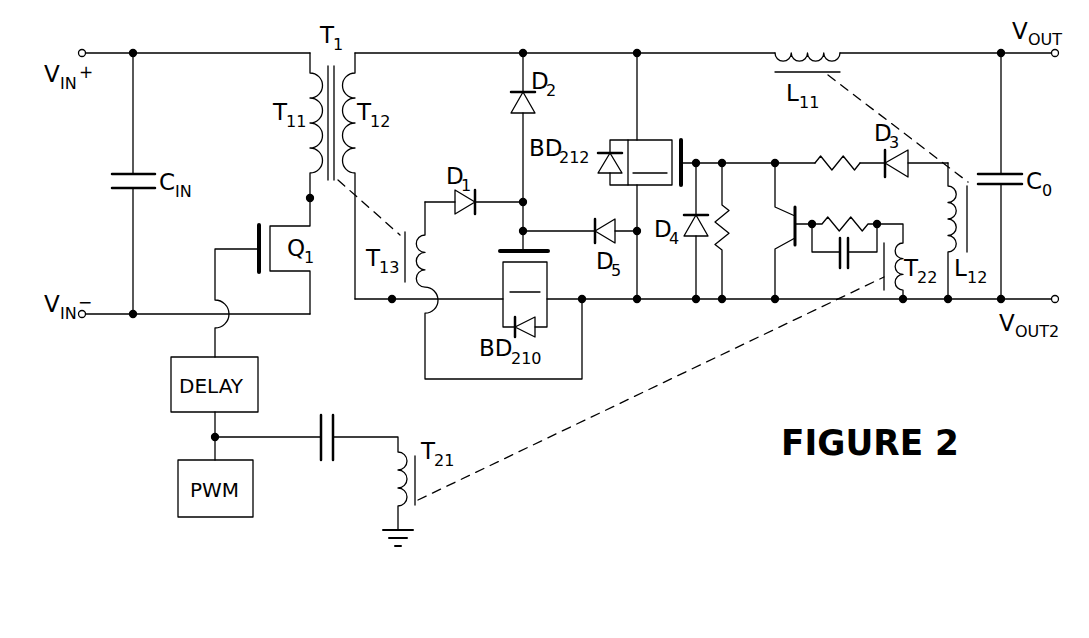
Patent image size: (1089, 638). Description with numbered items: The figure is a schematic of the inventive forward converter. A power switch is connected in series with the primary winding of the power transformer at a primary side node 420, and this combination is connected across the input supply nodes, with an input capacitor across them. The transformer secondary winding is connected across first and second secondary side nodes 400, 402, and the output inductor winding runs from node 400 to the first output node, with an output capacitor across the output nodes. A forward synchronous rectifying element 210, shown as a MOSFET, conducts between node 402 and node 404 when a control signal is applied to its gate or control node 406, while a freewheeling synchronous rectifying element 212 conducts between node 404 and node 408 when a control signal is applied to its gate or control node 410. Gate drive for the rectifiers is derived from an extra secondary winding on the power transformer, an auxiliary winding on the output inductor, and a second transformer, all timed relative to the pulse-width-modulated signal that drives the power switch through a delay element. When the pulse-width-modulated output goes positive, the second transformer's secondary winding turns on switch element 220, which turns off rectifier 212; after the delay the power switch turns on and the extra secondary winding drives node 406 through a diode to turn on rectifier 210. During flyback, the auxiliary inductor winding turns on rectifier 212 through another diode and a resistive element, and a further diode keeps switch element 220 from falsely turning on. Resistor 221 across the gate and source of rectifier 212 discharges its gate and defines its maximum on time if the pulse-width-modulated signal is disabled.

The first secondary side node 400 is at (523, 50).
The second secondary side node 402 is at (389, 305).
The node 404 is at (692, 304).
The gate or control node of rectifier 210 406 is at (527, 202).
The node 408 is at (637, 50).
The gate or control node of rectifier 212 410 is at (699, 159).
The primary side node 420 is at (303, 199).
The forward synchronous rectifying element 210 is at (524, 294).
The freewheeling synchronous rectifying element 212 is at (639, 162).
The switch element 220 is at (811, 204).
The resistor 221 is at (745, 200).